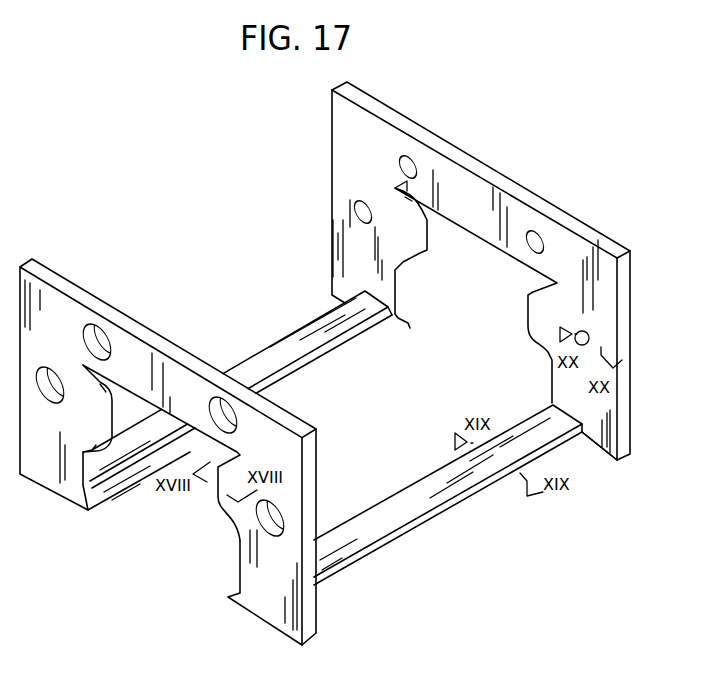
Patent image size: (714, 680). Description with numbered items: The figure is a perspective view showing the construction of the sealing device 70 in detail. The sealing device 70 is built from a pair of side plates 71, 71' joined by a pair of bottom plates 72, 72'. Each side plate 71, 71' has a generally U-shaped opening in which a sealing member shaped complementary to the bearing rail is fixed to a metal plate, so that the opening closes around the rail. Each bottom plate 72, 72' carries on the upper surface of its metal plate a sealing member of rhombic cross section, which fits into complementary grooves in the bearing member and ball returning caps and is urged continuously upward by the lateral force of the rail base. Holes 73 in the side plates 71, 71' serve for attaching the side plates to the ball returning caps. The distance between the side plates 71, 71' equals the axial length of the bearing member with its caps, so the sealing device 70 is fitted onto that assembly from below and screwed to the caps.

The sealing device 70 is at (419, 108).
The side plate 71 is at (161, 452).
The side plate 71' is at (442, 275).
The bottom plate 72 is at (465, 495).
The bottom plate 72' is at (242, 400).
The hole 73 is at (592, 338).